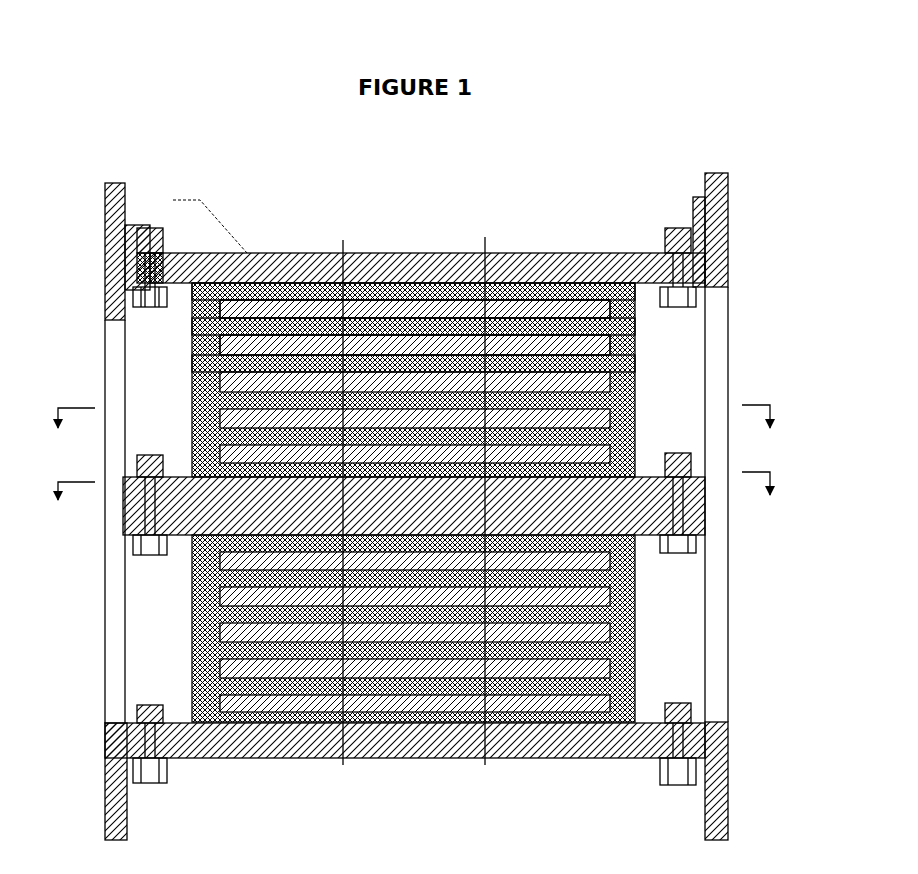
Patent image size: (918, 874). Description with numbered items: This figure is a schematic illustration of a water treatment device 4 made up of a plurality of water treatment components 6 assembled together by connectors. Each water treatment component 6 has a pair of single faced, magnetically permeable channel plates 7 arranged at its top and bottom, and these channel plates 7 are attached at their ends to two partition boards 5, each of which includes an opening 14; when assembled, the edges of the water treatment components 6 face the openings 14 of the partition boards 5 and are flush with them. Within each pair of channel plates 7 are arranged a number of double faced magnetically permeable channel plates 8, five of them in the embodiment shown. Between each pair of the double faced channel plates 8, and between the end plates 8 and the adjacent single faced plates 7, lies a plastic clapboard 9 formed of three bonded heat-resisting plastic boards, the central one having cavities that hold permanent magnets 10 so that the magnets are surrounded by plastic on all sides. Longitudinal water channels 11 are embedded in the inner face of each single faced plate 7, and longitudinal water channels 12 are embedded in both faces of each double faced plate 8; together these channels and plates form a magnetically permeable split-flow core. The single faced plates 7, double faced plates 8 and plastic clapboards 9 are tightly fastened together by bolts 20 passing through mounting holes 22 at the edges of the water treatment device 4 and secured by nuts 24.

The water treatment device 4 is at (133, 180).
The partition board 5 is at (107, 227).
The water treatment component 6 is at (640, 357).
The single faced magnetically permeable channel plate 7 is at (380, 252).
The double faced magnetically permeable channel plate 8 is at (510, 258).
The plastic clapboard 9 is at (420, 253).
The permanent magnet 10 is at (463, 258).
The longitudinal water channel 11 is at (541, 258).
The longitudinal water channel 12 is at (566, 260).
The opening 14 is at (102, 317).
The bolt 20 is at (160, 235).
The mounting hole 22 is at (140, 268).
The nut 24 is at (160, 300).